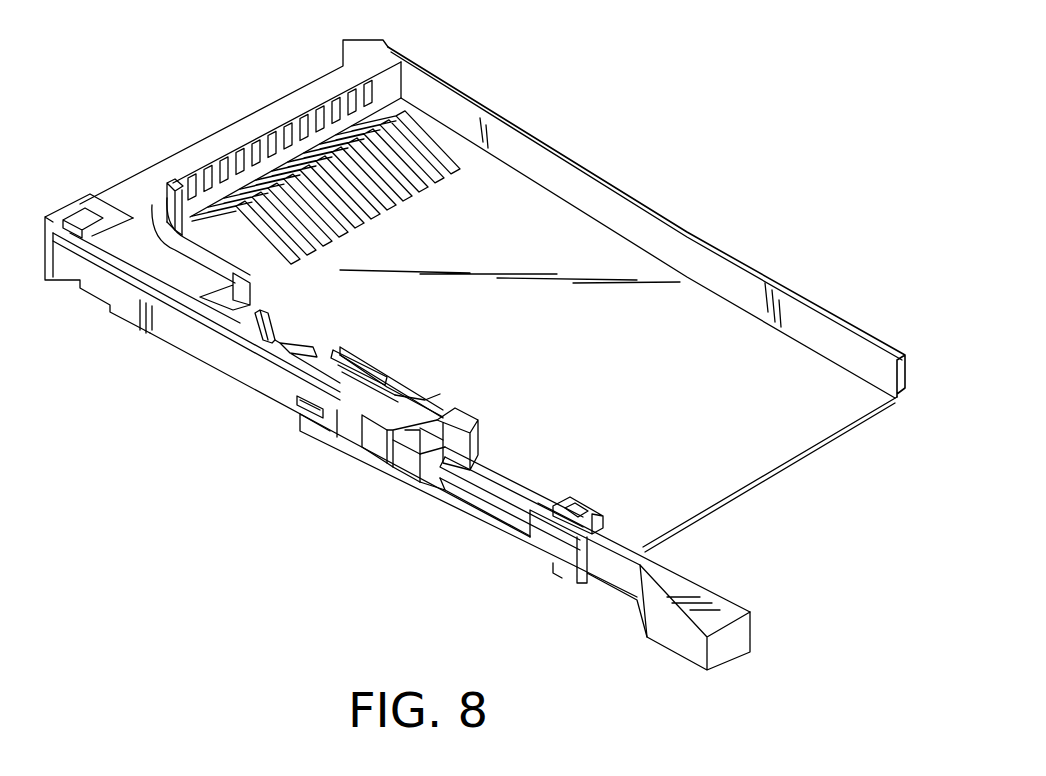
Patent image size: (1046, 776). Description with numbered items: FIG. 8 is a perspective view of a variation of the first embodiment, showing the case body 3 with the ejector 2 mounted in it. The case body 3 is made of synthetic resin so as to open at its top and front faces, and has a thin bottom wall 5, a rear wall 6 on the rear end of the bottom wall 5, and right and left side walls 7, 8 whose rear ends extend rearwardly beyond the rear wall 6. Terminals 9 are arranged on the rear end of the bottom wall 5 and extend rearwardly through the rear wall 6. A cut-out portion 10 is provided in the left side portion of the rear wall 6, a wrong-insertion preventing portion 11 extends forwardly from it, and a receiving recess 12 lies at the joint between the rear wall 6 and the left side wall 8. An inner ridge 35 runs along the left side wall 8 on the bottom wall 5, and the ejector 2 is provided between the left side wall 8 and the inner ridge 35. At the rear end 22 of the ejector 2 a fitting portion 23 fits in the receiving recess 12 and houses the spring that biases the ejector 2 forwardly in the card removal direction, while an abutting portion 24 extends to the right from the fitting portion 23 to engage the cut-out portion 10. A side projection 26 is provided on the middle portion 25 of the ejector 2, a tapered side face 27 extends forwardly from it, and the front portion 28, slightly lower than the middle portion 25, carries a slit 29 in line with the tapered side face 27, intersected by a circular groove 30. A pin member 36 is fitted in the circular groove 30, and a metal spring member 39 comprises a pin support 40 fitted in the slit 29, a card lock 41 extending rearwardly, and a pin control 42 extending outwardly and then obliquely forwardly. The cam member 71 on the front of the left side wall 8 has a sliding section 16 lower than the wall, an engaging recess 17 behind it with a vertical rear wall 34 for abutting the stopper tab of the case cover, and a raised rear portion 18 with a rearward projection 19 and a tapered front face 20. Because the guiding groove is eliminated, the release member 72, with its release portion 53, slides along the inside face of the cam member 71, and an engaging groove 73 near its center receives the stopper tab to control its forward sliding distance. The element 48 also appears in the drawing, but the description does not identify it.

The ejector 2 is at (140, 248).
The case body 3 is at (542, 130).
The bottom wall 5 is at (580, 245).
The rear wall 6 is at (290, 108).
The right side wall 7 is at (585, 185).
The left side wall 8 is at (360, 442).
The terminals 9 is at (408, 125).
The cut-out portion 10 is at (168, 190).
The wrong-insertion preventing portion 11 is at (245, 290).
The receiving recess 12 is at (75, 195).
The sliding section 16 is at (515, 527).
The engaging recess 17 is at (395, 470).
The raised rear portion 18 is at (420, 484).
The rearward projection 19 is at (405, 478).
The tapered front face 20 is at (505, 472).
The rear end 22 is at (137, 266).
The fitting portion 23 is at (118, 213).
The abutting portion 24 is at (180, 212).
The middle portion 25 is at (247, 333).
The side projection 26 is at (275, 322).
The tapered side face 27 is at (290, 345).
The front portion 28 is at (463, 413).
The slit 29 is at (423, 400).
The circular groove 30 is at (398, 382).
The vertical rear wall 34 is at (385, 452).
The inner ridge 35 is at (530, 486).
The pin member 36 is at (420, 428).
The spring member 39 is at (370, 368).
The pin support 40 is at (410, 388).
The card lock 41 is at (320, 345).
The pin control 42 is at (318, 430).
The guide rib 48 is at (445, 437).
The release portion 53 is at (452, 466).
The cam member 71 is at (478, 514).
The release member 72 is at (700, 579).
The engaging groove 73 is at (583, 517).